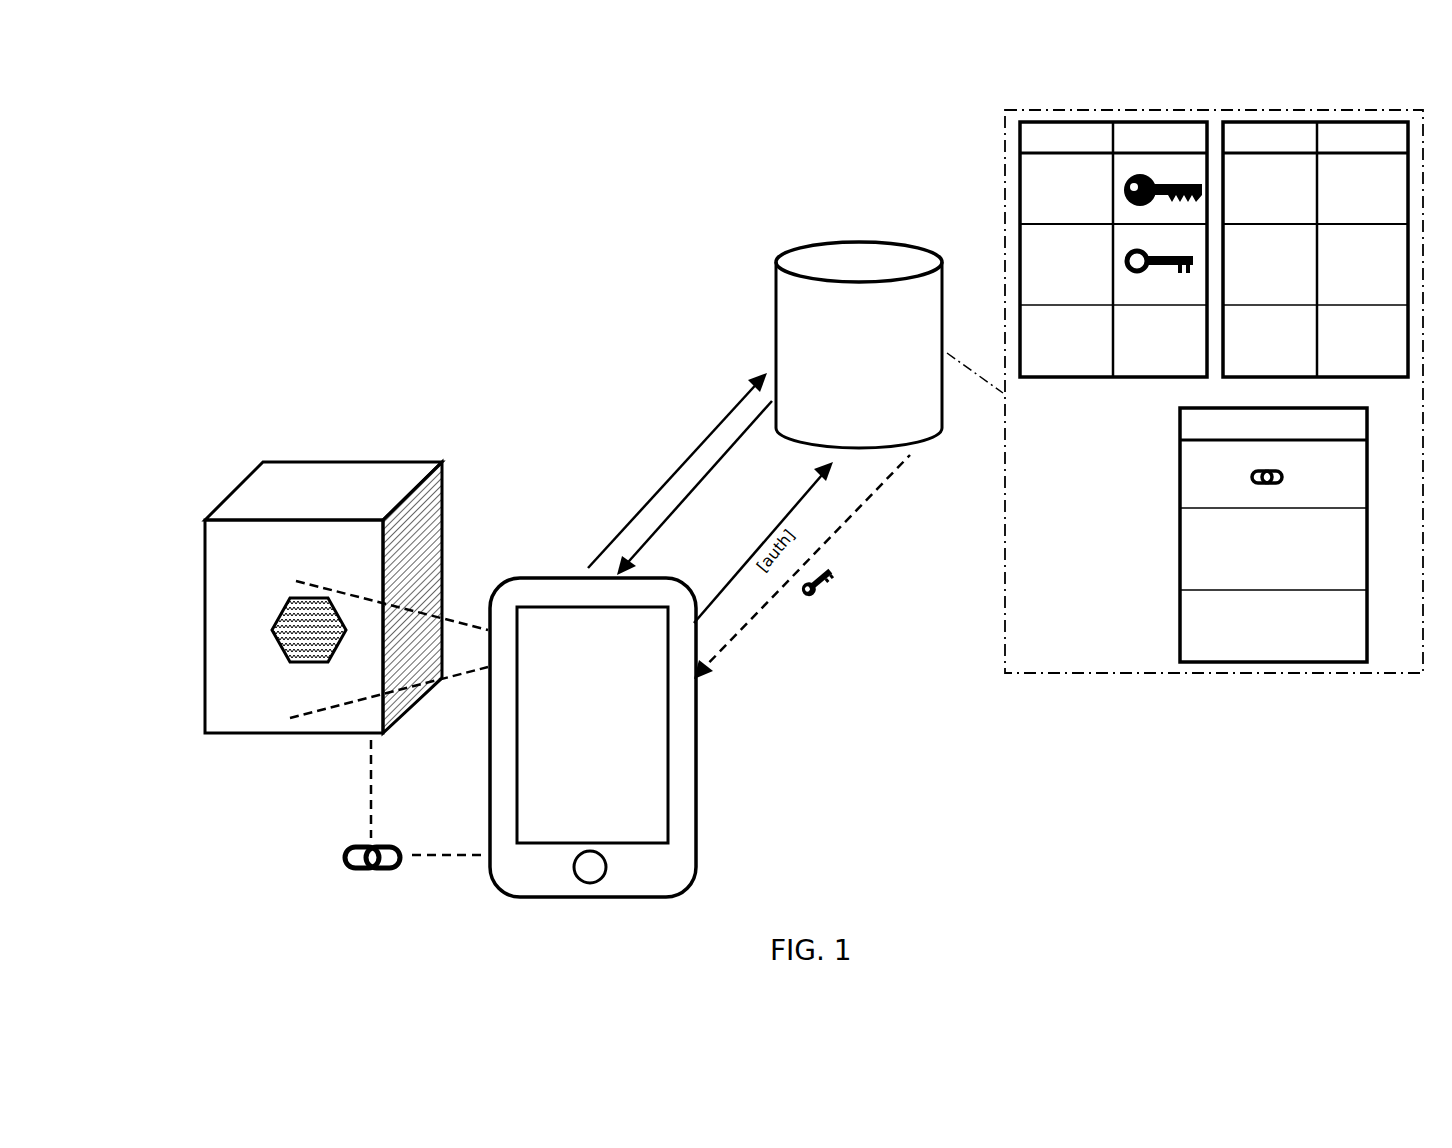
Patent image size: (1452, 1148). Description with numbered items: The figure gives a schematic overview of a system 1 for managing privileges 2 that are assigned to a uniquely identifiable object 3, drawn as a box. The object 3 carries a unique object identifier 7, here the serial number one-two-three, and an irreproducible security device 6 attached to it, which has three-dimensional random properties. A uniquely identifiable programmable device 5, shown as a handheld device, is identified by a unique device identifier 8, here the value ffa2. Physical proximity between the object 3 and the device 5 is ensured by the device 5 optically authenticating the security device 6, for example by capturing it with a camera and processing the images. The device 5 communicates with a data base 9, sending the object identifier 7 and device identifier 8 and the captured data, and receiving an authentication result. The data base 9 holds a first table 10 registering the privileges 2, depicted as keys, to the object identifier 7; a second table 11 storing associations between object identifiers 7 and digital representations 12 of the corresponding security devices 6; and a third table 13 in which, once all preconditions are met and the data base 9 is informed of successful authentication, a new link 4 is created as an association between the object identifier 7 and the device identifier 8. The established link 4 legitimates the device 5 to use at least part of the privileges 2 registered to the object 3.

The system 1 is at (495, 285).
The privileges 2 is at (822, 591).
The uniquely identifiable object 3 is at (238, 613).
The link 4 is at (372, 880).
The uniquely identifiable programmable device 5 is at (527, 872).
The irreproducible security device 6 is at (285, 640).
The unique object identifier 7 is at (290, 702).
The unique device identifier 8 is at (645, 459).
The data base 9 is at (858, 265).
The first table 10 is at (1072, 121).
The second table 11 is at (1330, 121).
The digital representations 12 is at (726, 480).
The third table 13 is at (1315, 662).